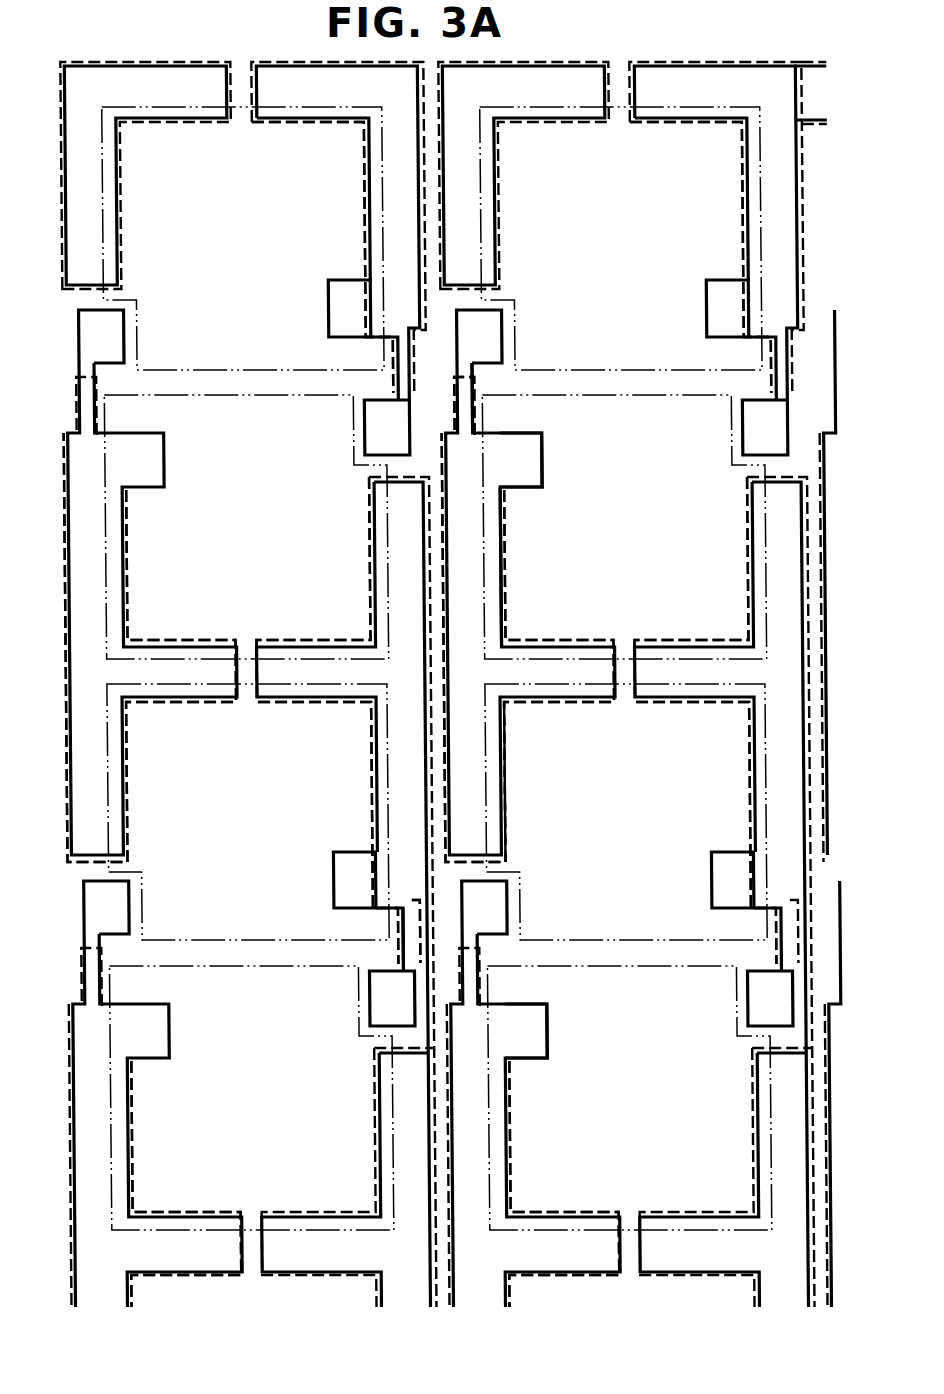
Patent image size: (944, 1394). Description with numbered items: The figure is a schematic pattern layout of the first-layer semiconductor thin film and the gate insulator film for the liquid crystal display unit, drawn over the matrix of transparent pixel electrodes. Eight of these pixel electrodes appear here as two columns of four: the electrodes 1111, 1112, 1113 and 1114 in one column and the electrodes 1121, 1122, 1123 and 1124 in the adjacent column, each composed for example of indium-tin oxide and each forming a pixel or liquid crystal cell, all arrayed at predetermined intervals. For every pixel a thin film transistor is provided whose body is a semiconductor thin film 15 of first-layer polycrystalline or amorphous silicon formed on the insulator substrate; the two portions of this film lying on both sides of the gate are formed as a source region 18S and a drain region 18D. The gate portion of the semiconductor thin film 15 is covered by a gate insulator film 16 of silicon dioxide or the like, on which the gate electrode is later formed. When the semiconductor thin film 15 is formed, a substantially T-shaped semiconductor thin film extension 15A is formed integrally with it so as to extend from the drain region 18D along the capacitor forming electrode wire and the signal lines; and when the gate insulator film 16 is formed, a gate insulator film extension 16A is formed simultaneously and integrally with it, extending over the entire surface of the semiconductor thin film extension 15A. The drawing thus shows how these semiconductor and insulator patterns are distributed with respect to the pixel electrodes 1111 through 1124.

The transparent pixel electrode 1111 is at (305, 257).
The transparent pixel electrode 1112 is at (162, 647).
The transparent pixel electrode 1113 is at (311, 720).
The transparent pixel electrode 1114 is at (203, 1184).
The transparent pixel electrode 1121 is at (679, 257).
The transparent pixel electrode 1122 is at (555, 647).
The transparent pixel electrode 1123 is at (689, 720).
The transparent pixel electrode 1124 is at (582, 1184).
The semiconductor thin film 15 is at (470, 417).
The semiconductor thin film extension 15A is at (498, 567).
The gate insulator film 16 is at (455, 400).
The gate insulator film extension 16A is at (506, 748).
The drain region 18D is at (330, 309).
The source region 18S is at (497, 333).